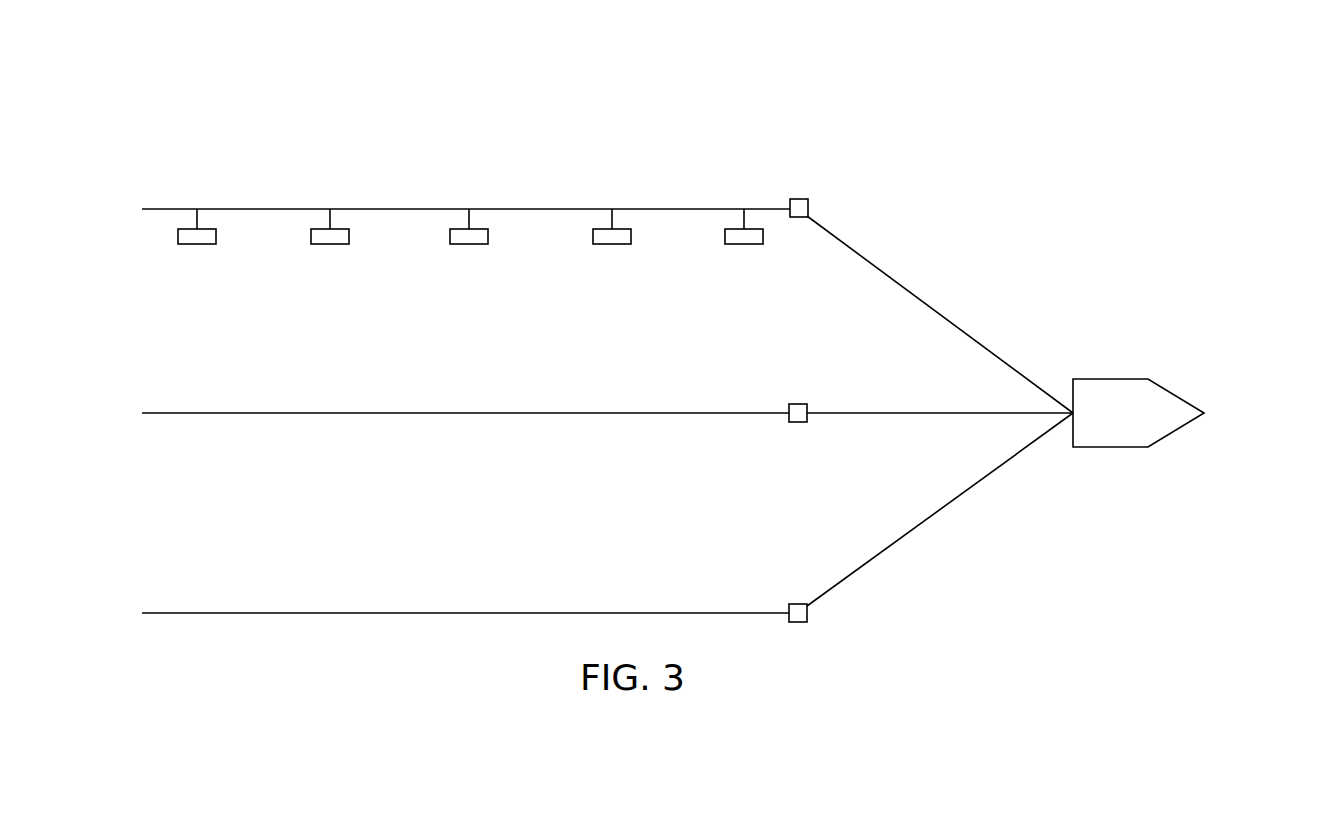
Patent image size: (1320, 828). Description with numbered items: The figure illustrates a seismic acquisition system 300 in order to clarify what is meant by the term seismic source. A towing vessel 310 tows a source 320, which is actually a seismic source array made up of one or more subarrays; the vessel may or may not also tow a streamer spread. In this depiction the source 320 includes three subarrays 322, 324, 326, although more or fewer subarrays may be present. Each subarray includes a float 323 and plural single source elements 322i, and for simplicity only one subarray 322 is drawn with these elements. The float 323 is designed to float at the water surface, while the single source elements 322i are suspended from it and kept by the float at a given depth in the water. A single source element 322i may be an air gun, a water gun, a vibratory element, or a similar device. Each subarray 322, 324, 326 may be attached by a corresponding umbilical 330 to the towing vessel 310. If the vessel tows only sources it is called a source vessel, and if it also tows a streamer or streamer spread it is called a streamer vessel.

The seismic acquisition system 300 is at (1155, 82).
The towing vessel 310 is at (1100, 345).
The source 320 is at (342, 170).
The subarray 322 is at (550, 198).
The single source element 322i is at (330, 258).
The float 323 is at (677, 208).
The subarray 324 is at (528, 412).
The subarray 326 is at (506, 612).
The umbilical 330 is at (945, 310).